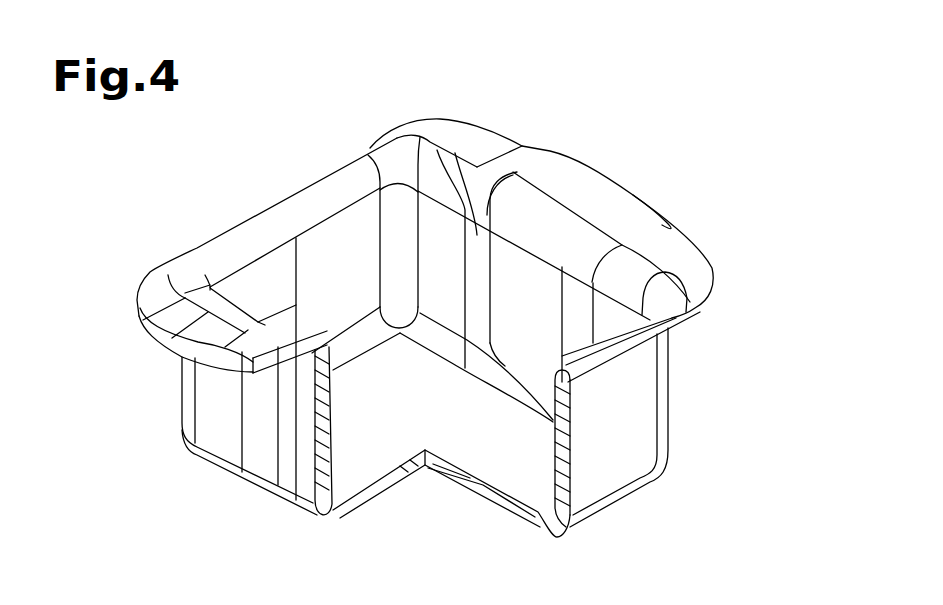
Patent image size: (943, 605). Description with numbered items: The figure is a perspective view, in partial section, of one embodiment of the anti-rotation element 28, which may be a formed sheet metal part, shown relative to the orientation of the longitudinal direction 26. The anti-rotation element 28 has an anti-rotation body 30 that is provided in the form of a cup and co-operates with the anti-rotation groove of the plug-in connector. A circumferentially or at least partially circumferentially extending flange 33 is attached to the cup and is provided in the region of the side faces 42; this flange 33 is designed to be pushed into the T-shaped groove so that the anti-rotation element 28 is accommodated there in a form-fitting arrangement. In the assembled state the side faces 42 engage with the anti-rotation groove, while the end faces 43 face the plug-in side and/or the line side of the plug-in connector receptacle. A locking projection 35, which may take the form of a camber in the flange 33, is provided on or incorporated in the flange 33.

The longitudinal direction 26 is at (182, 152).
The anti-rotation element 28 is at (598, 103).
The locking projection 35 is at (625, 150).
The flange 33 is at (687, 253).
The side faces 42 is at (685, 360).
The end faces 43 is at (172, 382).
The anti-rotation body 30 is at (296, 514).